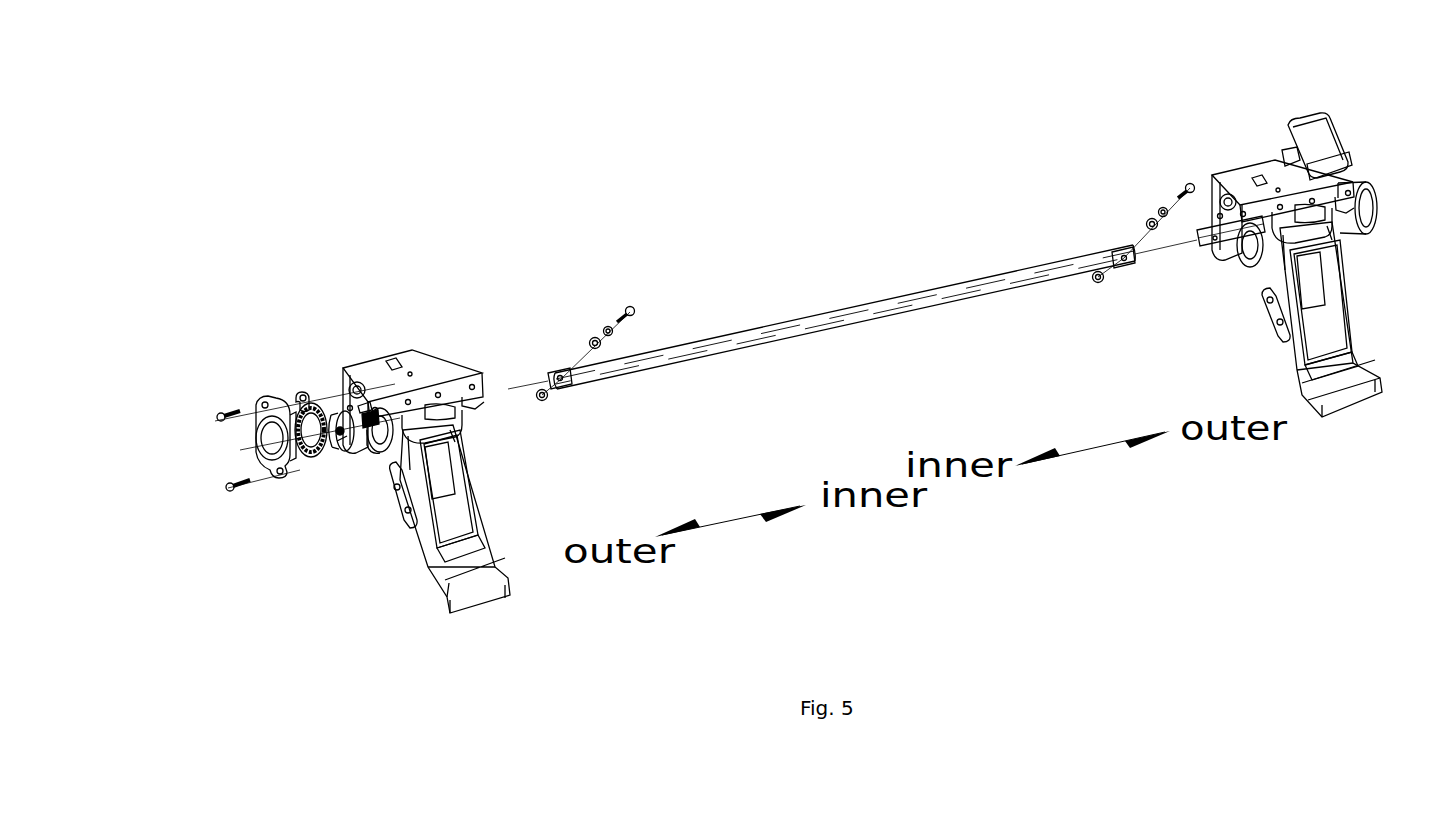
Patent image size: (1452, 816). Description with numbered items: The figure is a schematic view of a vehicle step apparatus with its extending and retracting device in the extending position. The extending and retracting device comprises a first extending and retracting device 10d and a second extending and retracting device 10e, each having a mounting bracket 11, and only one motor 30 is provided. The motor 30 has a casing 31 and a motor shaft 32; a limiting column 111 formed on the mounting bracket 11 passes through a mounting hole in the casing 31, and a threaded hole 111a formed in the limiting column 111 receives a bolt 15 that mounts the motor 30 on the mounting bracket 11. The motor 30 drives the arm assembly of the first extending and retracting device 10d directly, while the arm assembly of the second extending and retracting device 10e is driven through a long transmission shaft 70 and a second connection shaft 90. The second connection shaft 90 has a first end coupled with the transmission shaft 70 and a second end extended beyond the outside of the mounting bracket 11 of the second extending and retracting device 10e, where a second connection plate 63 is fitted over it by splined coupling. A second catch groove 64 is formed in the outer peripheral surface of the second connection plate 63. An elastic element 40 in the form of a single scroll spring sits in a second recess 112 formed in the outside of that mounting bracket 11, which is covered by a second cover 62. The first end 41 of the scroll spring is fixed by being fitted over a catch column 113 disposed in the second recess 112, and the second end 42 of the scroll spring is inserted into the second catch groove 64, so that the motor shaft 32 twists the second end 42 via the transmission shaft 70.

The first extending and retracting device 10d is at (1353, 382).
The second extending and retracting device 10e is at (483, 562).
The mounting bracket 11 is at (430, 372).
The bolt 15 is at (218, 414).
The motor 30 is at (1110, 85).
The casing 31 is at (1350, 215).
The motor shaft 32 is at (1188, 186).
The elastic element 40 is at (300, 397).
The first end of the scroll spring 41 is at (302, 399).
The second end of the scroll spring 42 is at (296, 408).
The second cover 62 is at (247, 454).
The second connection plate 63 is at (343, 454).
The second catch groove 64 is at (343, 454).
The transmission shaft 70 is at (886, 290).
The second connection shaft 90 is at (372, 415).
The limiting column 111 is at (352, 370).
The threaded hole 111a is at (361, 400).
The second recess 112 is at (445, 452).
The catch column 113 is at (368, 392).